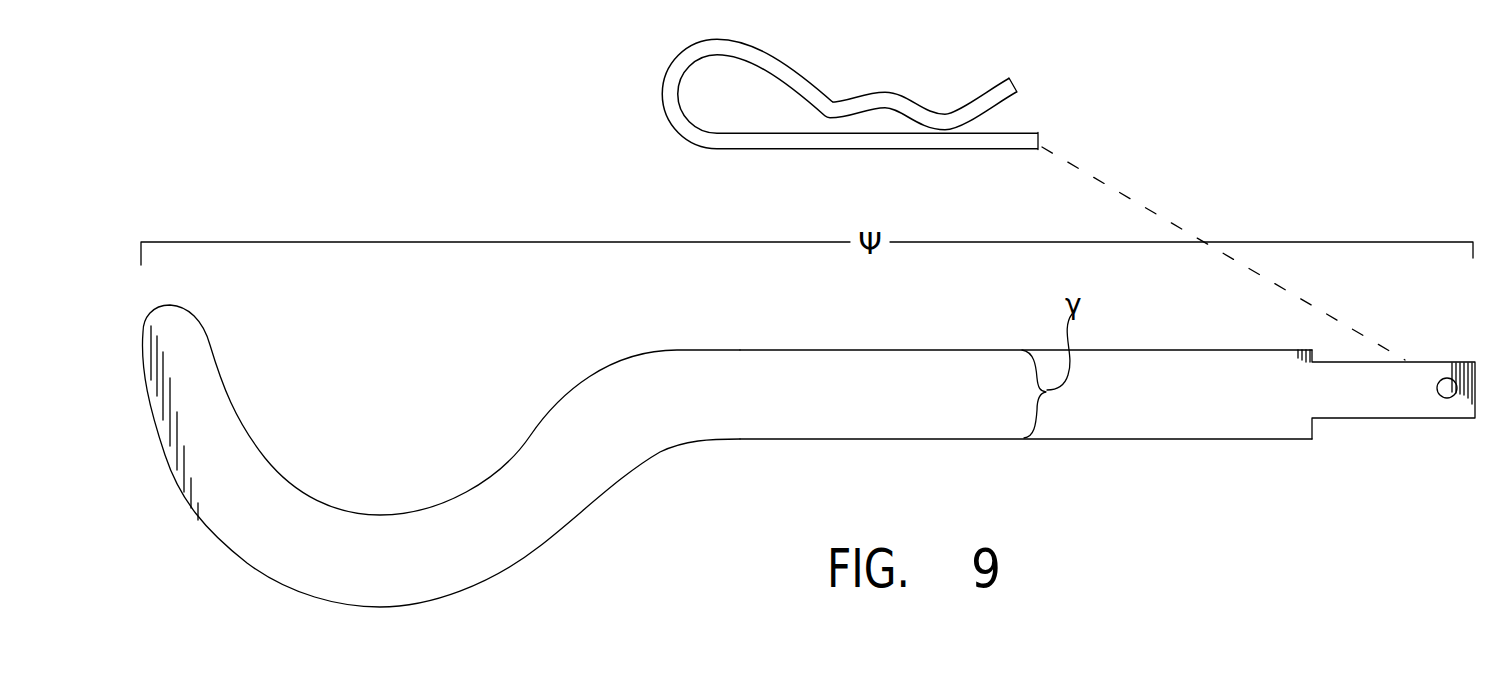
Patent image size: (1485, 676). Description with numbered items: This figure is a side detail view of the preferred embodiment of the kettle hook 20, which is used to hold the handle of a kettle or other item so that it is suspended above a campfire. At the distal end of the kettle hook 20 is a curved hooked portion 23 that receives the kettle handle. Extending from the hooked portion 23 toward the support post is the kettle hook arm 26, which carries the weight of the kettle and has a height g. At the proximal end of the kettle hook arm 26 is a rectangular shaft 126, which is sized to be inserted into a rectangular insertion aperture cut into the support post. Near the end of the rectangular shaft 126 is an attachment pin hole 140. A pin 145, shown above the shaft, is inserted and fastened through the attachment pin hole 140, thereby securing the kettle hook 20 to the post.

The kettle hook 20 is at (808, 448).
The hooked portion 23 is at (400, 455).
The kettle hook arm 26 is at (913, 370).
The rectangular shaft 126 is at (1355, 400).
The attachment pin hole 140 is at (1446, 398).
The pin 145 is at (885, 92).